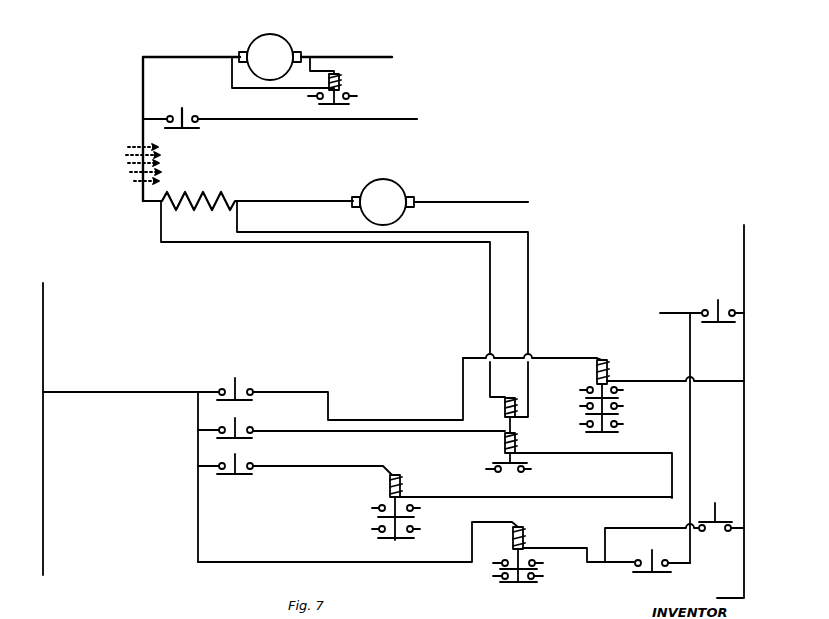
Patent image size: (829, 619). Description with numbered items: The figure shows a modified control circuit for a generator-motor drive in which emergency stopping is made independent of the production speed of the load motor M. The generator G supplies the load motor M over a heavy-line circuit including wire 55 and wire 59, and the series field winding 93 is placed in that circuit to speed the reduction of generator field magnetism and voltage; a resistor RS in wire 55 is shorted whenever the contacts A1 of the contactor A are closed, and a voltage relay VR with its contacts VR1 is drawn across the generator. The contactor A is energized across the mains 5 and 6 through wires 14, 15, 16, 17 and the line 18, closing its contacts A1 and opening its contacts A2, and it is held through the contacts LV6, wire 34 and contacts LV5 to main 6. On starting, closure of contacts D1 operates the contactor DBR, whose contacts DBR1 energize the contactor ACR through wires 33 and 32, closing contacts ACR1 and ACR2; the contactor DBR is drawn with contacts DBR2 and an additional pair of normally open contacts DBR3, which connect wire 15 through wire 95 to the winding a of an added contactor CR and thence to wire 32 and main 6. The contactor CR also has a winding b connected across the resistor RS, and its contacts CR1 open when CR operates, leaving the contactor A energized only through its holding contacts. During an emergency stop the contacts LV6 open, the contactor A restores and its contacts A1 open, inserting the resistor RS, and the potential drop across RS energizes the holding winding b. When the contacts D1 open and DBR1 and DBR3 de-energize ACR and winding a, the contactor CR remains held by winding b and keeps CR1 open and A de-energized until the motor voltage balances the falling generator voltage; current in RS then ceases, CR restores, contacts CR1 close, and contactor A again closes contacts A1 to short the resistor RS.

The main 5 is at (43, 366).
The main 6 is at (748, 398).
The wire 14 is at (125, 392).
The wire 15 is at (198, 416).
The wire 16 is at (275, 562).
The wire 17 is at (583, 548).
The line 18 is at (644, 528).
The wire 32 is at (714, 381).
The wire 33 is at (601, 498).
The wire 34 is at (692, 470).
The wire 55 is at (143, 79).
The wire 59 is at (380, 57).
The series field winding 93 is at (126, 153).
The wire 95 is at (352, 432).
The generator G is at (283, 42).
The load motor M is at (395, 186).
The resistor RS is at (248, 191).
The voltage relay coil VR is at (298, 73).
The voltage relay contact VR1 is at (348, 96).
The contacts A1 is at (280, 126).
The contacts D1 is at (340, 389).
The contacts DBR3 is at (244, 433).
The contacts DBR1 is at (295, 469).
The contactor ACR is at (414, 486).
The contacts ACR1 is at (415, 518).
The contacts ACR2 is at (415, 530).
The contactor A is at (529, 536).
The contacts A2 is at (528, 566).
The contacts LV6 is at (661, 571).
The contacts LV5 is at (702, 305).
The contacts CR1 is at (523, 465).
The contactor CR is at (522, 435).
The winding a is at (500, 441).
The winding b is at (500, 409).
The contactor DBR is at (553, 365).
The contact DBR2 is at (620, 407).